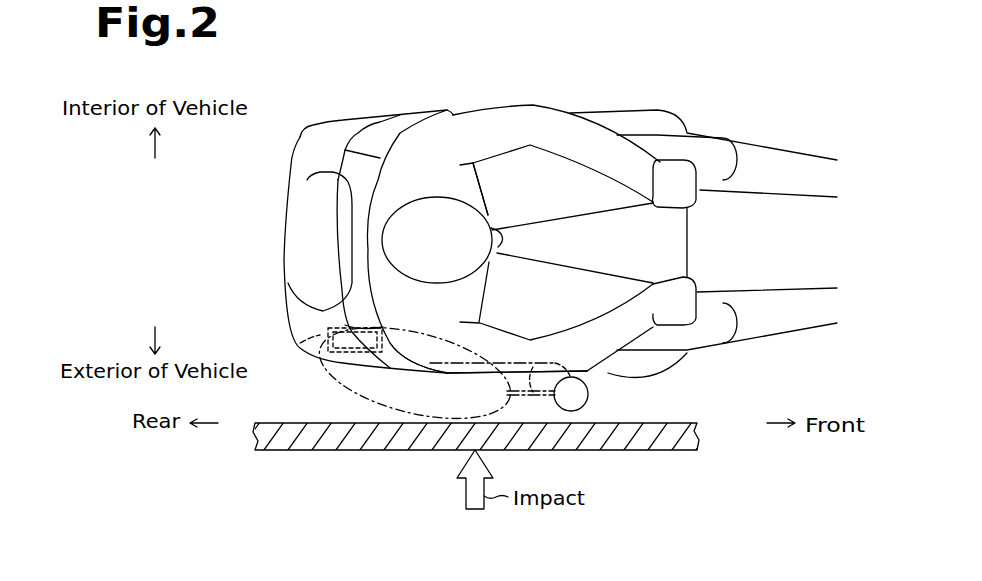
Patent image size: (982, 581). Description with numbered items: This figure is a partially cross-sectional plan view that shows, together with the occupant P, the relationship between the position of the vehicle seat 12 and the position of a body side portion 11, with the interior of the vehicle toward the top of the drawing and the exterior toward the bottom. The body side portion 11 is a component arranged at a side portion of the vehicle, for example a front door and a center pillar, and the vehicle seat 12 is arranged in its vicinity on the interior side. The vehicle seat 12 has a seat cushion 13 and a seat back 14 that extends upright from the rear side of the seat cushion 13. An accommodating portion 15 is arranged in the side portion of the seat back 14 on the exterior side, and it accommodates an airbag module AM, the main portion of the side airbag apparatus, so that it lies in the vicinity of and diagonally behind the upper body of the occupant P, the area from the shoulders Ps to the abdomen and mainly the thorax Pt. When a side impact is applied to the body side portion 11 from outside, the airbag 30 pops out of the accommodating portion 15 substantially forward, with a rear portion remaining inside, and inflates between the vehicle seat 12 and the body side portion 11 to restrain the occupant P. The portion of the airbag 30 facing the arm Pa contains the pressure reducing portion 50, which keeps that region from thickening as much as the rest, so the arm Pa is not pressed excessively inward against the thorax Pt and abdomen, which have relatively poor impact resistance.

The body side portion 11 is at (697, 437).
The vehicle seat 12 is at (381, 241).
The seat back 14 is at (293, 177).
The seat cushion 13 is at (690, 246).
The accommodating portion 15 is at (303, 350).
The airbag 30 is at (588, 392).
The pressure reducing portion 50 is at (560, 363).
The airbag module AM is at (410, 372).
The occupant P is at (369, 241).
The thorax Pt is at (488, 190).
The shoulders Ps is at (413, 347).
The arm Pa is at (477, 370).